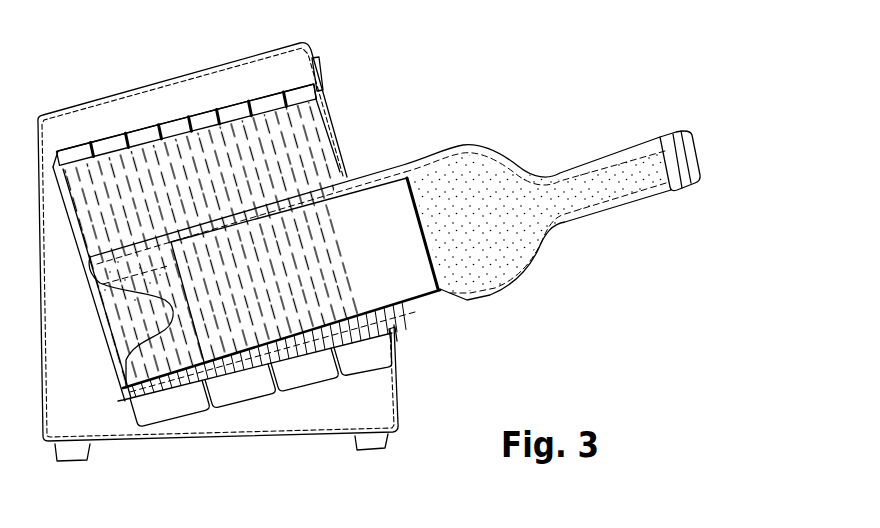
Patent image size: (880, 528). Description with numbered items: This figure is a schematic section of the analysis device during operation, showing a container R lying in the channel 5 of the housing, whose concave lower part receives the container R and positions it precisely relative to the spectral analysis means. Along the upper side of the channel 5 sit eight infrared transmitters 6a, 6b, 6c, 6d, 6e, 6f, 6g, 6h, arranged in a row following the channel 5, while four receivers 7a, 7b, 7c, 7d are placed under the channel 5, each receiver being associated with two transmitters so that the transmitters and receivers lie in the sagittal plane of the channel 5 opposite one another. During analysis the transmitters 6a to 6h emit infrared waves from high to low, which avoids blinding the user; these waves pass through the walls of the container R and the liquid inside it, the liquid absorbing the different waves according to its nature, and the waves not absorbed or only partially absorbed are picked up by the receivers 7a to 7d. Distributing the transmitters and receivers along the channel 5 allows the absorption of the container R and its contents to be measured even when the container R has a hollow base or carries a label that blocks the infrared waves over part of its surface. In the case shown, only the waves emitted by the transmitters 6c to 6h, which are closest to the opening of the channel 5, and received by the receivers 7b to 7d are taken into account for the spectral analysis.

The channel 5 is at (327, 127).
The transmitter 6a is at (68, 155).
The transmitter 6b is at (103, 147).
The transmitter 6c is at (140, 137).
The transmitter 6d is at (177, 127).
The transmitter 6e is at (210, 117).
The transmitter 6f is at (243, 107).
The transmitter 6g is at (273, 92).
The transmitter 6h is at (300, 84).
The receiver 7a is at (175, 405).
The receiver 7b is at (234, 386).
The receiver 7c is at (297, 367).
The receiver 7d is at (361, 356).
The container R is at (557, 203).